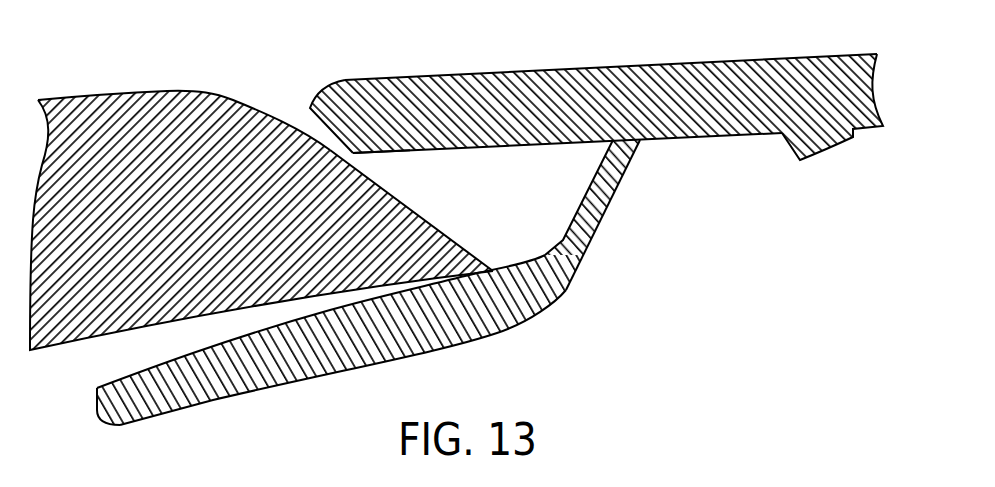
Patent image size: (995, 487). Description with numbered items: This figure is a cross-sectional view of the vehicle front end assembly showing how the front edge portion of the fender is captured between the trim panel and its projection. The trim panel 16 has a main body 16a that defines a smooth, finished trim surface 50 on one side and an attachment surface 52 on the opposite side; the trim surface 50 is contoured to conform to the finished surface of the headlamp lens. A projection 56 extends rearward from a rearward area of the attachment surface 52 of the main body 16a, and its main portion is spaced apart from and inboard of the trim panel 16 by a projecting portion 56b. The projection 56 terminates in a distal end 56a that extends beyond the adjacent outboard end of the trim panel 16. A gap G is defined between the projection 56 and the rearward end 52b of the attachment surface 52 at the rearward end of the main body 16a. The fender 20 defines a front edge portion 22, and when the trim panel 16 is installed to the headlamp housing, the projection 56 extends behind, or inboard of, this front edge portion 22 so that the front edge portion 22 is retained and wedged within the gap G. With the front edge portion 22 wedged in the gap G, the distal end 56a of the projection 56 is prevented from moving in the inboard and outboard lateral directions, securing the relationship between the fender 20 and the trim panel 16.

The trim panel 16 is at (590, 97).
The main body 16a is at (730, 97).
The fender 20 is at (265, 195).
The front edge portion 22 is at (440, 229).
The trim surface 50 is at (600, 63).
The attachment surface 52 is at (700, 124).
The rearward end of the attachment surface 52b is at (311, 116).
The projection 56 is at (352, 285).
The distal end 56a is at (97, 413).
The projecting portion 56b is at (611, 200).
The gap G is at (402, 153).